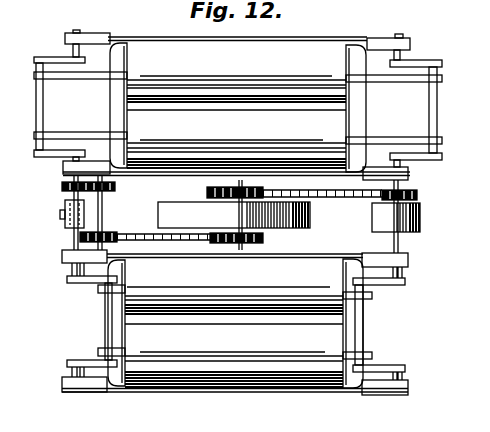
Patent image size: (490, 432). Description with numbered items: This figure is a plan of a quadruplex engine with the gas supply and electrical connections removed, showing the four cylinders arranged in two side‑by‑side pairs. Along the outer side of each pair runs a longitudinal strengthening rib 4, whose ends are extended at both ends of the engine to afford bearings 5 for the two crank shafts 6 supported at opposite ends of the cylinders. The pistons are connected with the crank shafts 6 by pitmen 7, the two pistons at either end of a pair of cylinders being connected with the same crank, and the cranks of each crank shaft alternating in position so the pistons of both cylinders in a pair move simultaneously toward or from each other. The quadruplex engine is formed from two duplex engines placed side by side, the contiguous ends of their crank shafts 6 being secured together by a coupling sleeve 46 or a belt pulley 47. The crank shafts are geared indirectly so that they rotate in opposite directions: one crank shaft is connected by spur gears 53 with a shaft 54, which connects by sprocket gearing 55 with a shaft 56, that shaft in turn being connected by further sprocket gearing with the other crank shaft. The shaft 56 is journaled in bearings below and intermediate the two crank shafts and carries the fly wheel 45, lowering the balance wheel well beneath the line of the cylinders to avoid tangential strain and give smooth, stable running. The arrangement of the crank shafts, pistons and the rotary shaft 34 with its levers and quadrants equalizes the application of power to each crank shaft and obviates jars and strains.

The longitudinal strengthening rib 4 is at (152, 35).
The bearings 5 is at (65, 40).
The crank shafts 6 is at (36, 101).
The pitmen 7 is at (81, 79).
The rotary shaft 34 is at (328, 197).
The fly wheel 45 is at (234, 215).
The coupling sleeve 46 is at (65, 210).
The belt pulley 47 is at (420, 215).
The spur gears 53 is at (62, 186).
The shaft 54 is at (102, 199).
The sprocket gearing 55 is at (117, 234).
The shaft 56 is at (263, 242).